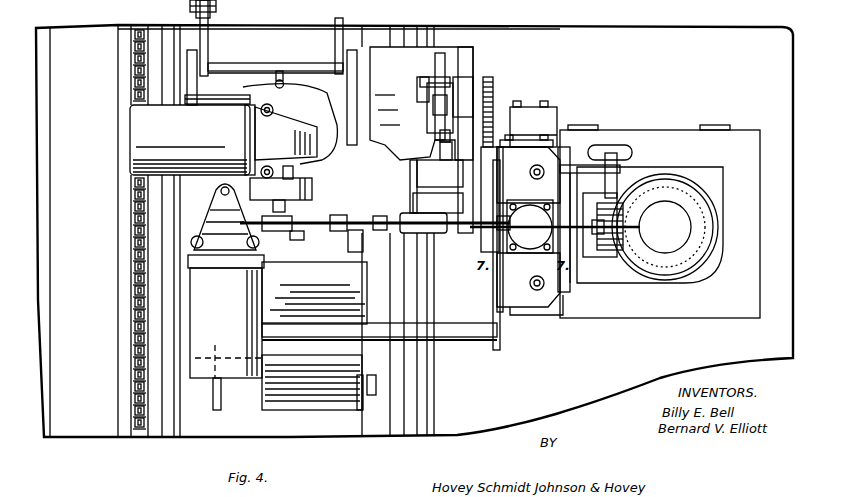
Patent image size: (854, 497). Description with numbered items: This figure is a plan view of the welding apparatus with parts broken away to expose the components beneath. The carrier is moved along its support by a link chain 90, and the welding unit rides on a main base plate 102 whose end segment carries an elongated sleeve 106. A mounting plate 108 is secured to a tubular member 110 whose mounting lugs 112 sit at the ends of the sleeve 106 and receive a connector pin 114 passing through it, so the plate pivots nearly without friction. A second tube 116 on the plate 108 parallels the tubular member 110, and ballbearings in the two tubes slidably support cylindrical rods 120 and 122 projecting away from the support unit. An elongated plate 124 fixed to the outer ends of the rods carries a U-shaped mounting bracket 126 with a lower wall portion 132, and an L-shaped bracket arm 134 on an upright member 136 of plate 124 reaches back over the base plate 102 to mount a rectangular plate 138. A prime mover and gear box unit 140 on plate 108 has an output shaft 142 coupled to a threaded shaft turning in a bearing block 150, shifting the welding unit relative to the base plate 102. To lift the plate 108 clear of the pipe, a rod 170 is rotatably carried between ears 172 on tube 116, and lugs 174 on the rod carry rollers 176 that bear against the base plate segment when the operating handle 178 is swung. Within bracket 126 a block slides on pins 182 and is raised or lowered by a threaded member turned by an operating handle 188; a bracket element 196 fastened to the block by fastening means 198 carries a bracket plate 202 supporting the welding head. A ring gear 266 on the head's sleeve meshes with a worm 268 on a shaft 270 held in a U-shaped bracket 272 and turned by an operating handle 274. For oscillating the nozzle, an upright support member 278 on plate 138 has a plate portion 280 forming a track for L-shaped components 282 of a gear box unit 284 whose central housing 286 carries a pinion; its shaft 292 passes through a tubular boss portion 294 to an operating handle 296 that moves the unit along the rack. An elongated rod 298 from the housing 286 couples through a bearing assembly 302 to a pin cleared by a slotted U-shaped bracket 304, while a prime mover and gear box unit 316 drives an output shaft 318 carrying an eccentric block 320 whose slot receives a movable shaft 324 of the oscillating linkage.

The link chain 90 is at (131, 62).
The main base plate 102 is at (183, 440).
The elongated sleeve 106 is at (276, 410).
The mounting plate 108 is at (363, 290).
The tubular member 110 is at (280, 327).
The mounting lugs 112 is at (216, 402).
The connector pin 114 is at (372, 385).
The tube 116 is at (236, 97).
The cylindrical rod 120 is at (490, 345).
The cylindrical rod 122 is at (386, 115).
The elongated plate 124 is at (497, 330).
The mounting bracket 126 is at (563, 147).
The lower rectangular wall portion 132 is at (500, 285).
The L-shaped bracket arm 134 is at (515, 150).
The upright member 136 is at (561, 125).
The rectangular plate 138 is at (493, 80).
The prime mover and gear box unit 140 is at (266, 298).
The output shaft 142 is at (248, 228).
The bearing block 150 is at (348, 238).
The rod 170 is at (262, 63).
The ears 172 is at (210, 103).
The lugs 174 is at (208, 48).
The rollers 176 is at (216, 10).
The operating handle 178 is at (280, 70).
The pins 182 is at (530, 172).
The operating handle 188 is at (530, 252).
The bracket element 196 is at (567, 290).
The fastening means 198 is at (610, 175).
The bracket plate 202 is at (690, 178).
The ring gear 266 is at (700, 195).
The worm 268 is at (646, 192).
The shaft 270 is at (612, 200).
The U-shaped bracket 272 is at (600, 257).
The operating handle 274 is at (610, 147).
The upright support member 278 is at (445, 66).
The rectangular plate portion 280 is at (460, 88).
The L-shaped components 282 is at (450, 68).
The gear box unit 284 is at (437, 128).
The central housing 286 is at (440, 142).
The shaft 292 is at (494, 92).
The tubular boss portion 294 is at (442, 108).
The operating handle 296 is at (535, 110).
The elongated rod 298 is at (440, 173).
The bearing assembly 302 is at (415, 180).
The U-shaped bracket 304 is at (413, 203).
The prime mover and gear box unit 316 is at (168, 100).
The output shaft 318 is at (293, 175).
The eccentric block 320 is at (312, 188).
The movable shaft 324 is at (300, 221).